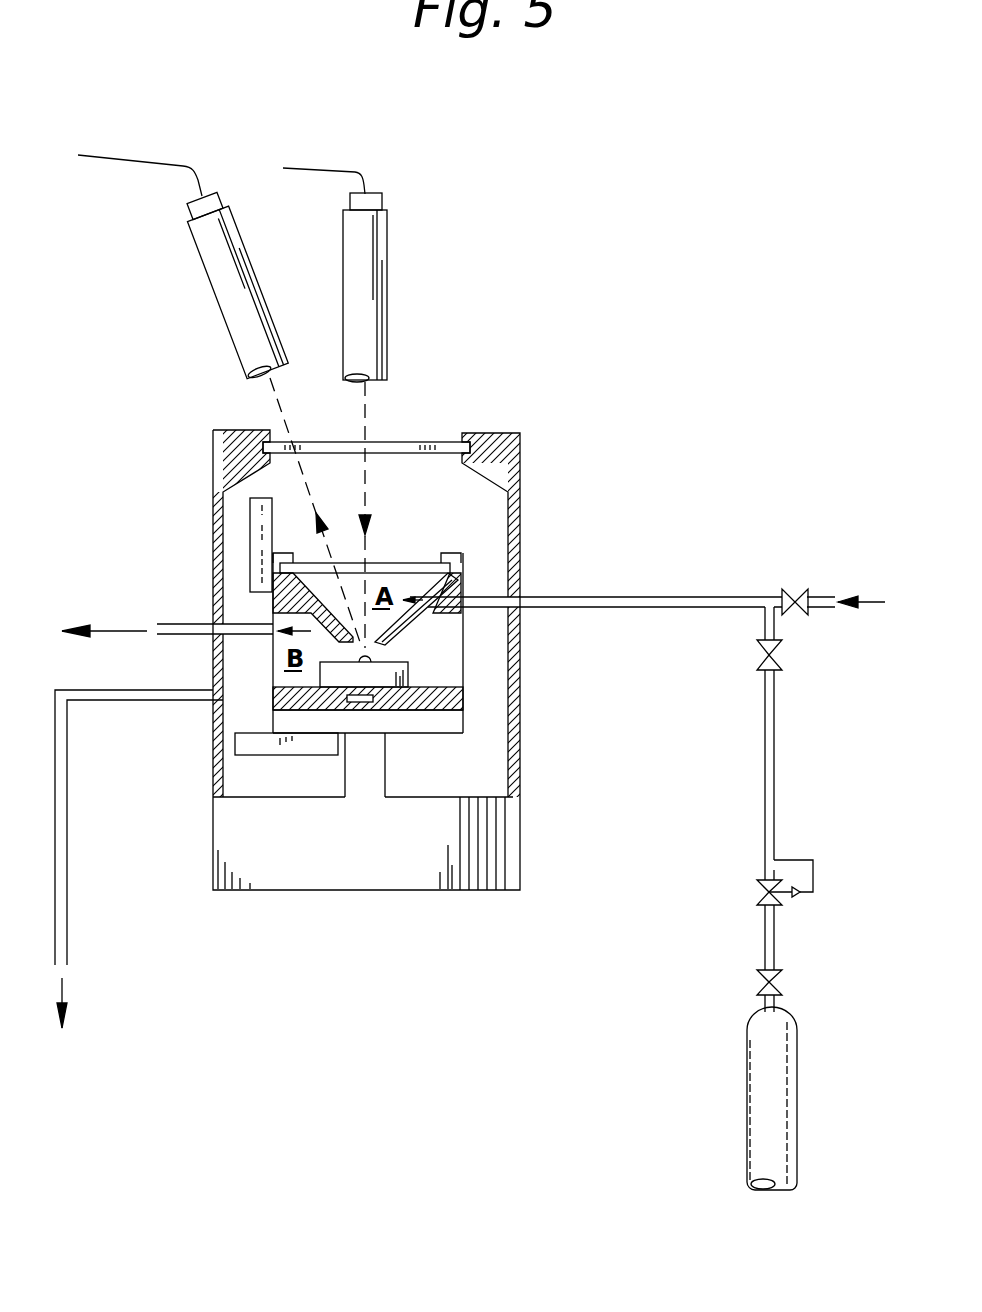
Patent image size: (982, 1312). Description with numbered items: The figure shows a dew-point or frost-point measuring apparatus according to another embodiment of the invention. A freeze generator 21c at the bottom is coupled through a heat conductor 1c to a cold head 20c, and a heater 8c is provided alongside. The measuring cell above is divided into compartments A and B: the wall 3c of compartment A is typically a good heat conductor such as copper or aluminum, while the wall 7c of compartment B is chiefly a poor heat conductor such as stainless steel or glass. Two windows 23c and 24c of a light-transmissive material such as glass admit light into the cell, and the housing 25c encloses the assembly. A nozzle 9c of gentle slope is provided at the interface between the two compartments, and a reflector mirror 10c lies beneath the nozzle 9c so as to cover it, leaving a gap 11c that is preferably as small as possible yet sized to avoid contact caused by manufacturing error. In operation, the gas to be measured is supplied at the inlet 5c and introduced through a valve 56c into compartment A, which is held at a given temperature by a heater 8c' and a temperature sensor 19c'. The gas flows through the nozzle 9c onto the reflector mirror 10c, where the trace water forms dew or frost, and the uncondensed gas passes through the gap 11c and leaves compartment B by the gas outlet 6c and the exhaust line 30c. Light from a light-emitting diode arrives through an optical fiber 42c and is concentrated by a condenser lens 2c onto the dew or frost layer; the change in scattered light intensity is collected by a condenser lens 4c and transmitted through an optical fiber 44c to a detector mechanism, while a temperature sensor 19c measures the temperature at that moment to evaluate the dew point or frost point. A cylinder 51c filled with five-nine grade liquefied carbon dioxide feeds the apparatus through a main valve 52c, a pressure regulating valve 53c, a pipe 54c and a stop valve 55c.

The heat conductor 1c is at (408, 723).
The condenser lens 2c is at (389, 277).
The wall of compartment A 3c is at (462, 572).
The condenser lens 4c is at (210, 293).
The inlet 5c is at (856, 589).
The gas outlet 6c is at (186, 614).
The wall of compartment B 7c is at (386, 653).
The heater 8c is at (243, 751).
The heater 8c' is at (217, 538).
The nozzle 9c is at (416, 611).
The reflector mirror 10c is at (466, 700).
The gap 11c is at (412, 668).
The temperature sensor 19c is at (460, 745).
The temperature sensor 19c' is at (592, 623).
The cold head 20c is at (370, 767).
The freeze generator 21c is at (433, 853).
The window 23c is at (415, 563).
The window 24c is at (437, 440).
The housing 25c is at (522, 462).
The exhaust pipe 30c is at (131, 878).
The optical fiber 42c is at (326, 170).
The optical fiber 44c is at (131, 160).
The cylinder 51c is at (797, 1085).
The main valve 52c is at (778, 980).
The pressure regulating valve 53c is at (777, 900).
The pipe 54c is at (775, 763).
The stop valve 55c is at (777, 654).
The valve 56c is at (797, 589).